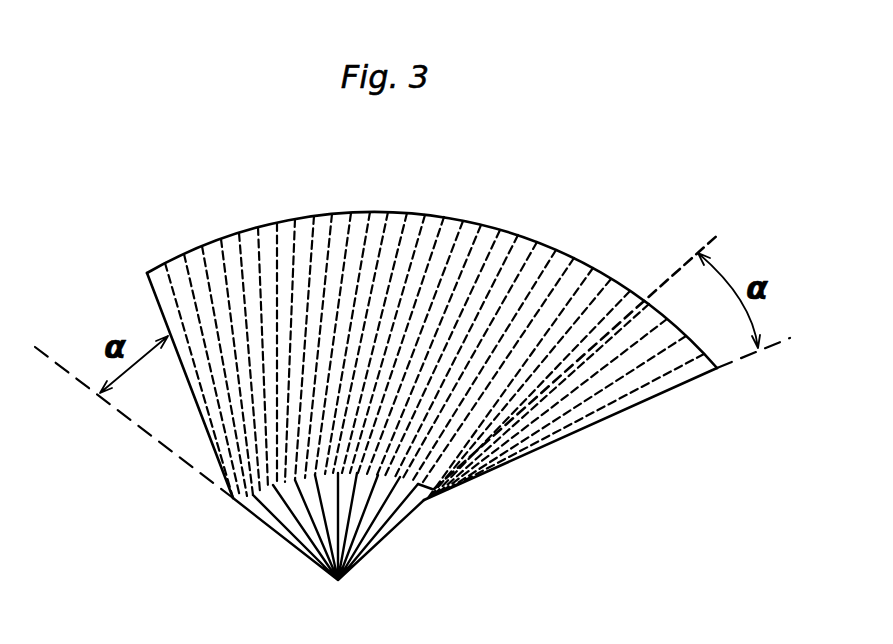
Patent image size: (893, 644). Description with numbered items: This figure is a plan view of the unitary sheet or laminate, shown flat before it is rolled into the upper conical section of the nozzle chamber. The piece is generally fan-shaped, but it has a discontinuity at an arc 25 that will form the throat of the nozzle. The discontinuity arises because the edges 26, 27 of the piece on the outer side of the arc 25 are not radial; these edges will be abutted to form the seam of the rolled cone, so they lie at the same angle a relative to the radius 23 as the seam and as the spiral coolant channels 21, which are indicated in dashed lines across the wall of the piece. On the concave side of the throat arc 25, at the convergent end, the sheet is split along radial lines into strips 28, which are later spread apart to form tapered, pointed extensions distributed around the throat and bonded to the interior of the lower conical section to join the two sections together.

The spiral coolant channels 21 is at (563, 277).
The radius 23 is at (153, 443).
The arc 25 is at (427, 508).
The edge 26 is at (153, 302).
The edge 27 is at (637, 408).
The strips 28 is at (290, 525).